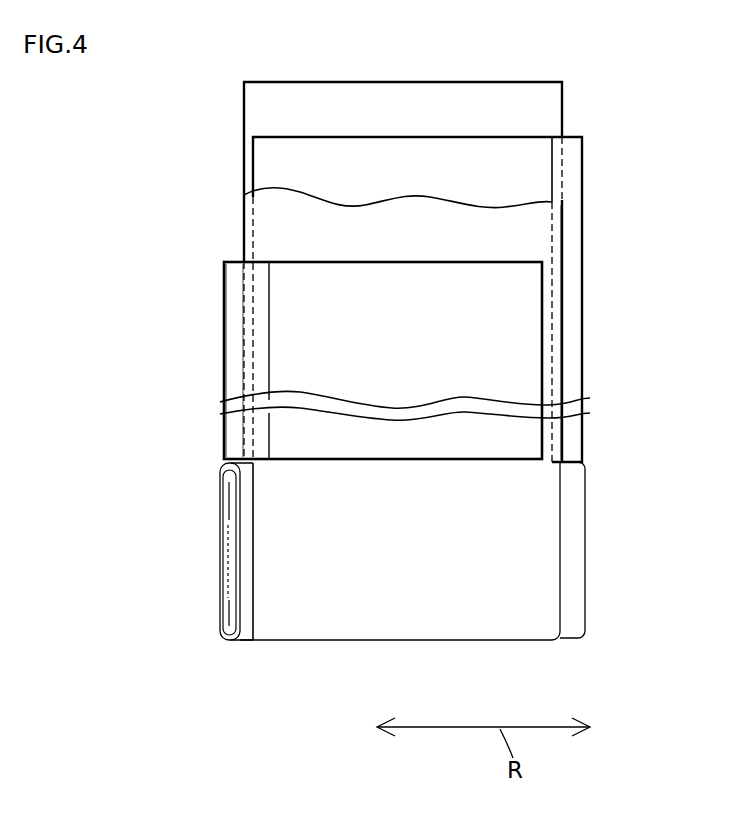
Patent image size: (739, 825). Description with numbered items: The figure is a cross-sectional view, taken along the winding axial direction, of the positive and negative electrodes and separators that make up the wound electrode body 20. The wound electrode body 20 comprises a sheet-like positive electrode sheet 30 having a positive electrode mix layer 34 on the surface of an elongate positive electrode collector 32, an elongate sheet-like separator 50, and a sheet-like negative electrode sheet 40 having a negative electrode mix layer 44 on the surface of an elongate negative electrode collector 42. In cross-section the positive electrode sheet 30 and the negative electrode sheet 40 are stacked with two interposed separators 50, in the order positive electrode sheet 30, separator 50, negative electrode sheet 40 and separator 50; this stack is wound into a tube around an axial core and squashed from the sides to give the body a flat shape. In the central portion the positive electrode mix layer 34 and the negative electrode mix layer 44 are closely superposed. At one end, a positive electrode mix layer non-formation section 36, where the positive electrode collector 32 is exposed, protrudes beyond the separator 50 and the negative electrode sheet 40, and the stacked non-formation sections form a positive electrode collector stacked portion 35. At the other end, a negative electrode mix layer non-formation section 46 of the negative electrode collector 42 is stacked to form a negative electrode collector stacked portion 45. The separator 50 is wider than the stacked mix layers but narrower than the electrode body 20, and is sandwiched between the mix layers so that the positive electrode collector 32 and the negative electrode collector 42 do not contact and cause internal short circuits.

The wound electrode body 20 is at (317, 620).
The positive electrode sheet 30 is at (222, 282).
The positive electrode collector 32 is at (315, 360).
The positive electrode mix layer 34 is at (280, 376).
The positive electrode collector stacked portion 35 is at (228, 522).
The positive electrode mix layer non-formation section 36 is at (236, 343).
The negative electrode sheet 40 is at (583, 197).
The negative electrode collector 42 is at (483, 299).
The negative electrode mix layer 44 is at (548, 160).
The negative electrode collector stacked portion 45 is at (575, 529).
The negative electrode mix layer non-formation section 46 is at (565, 263).
The separator 50 is at (265, 101).